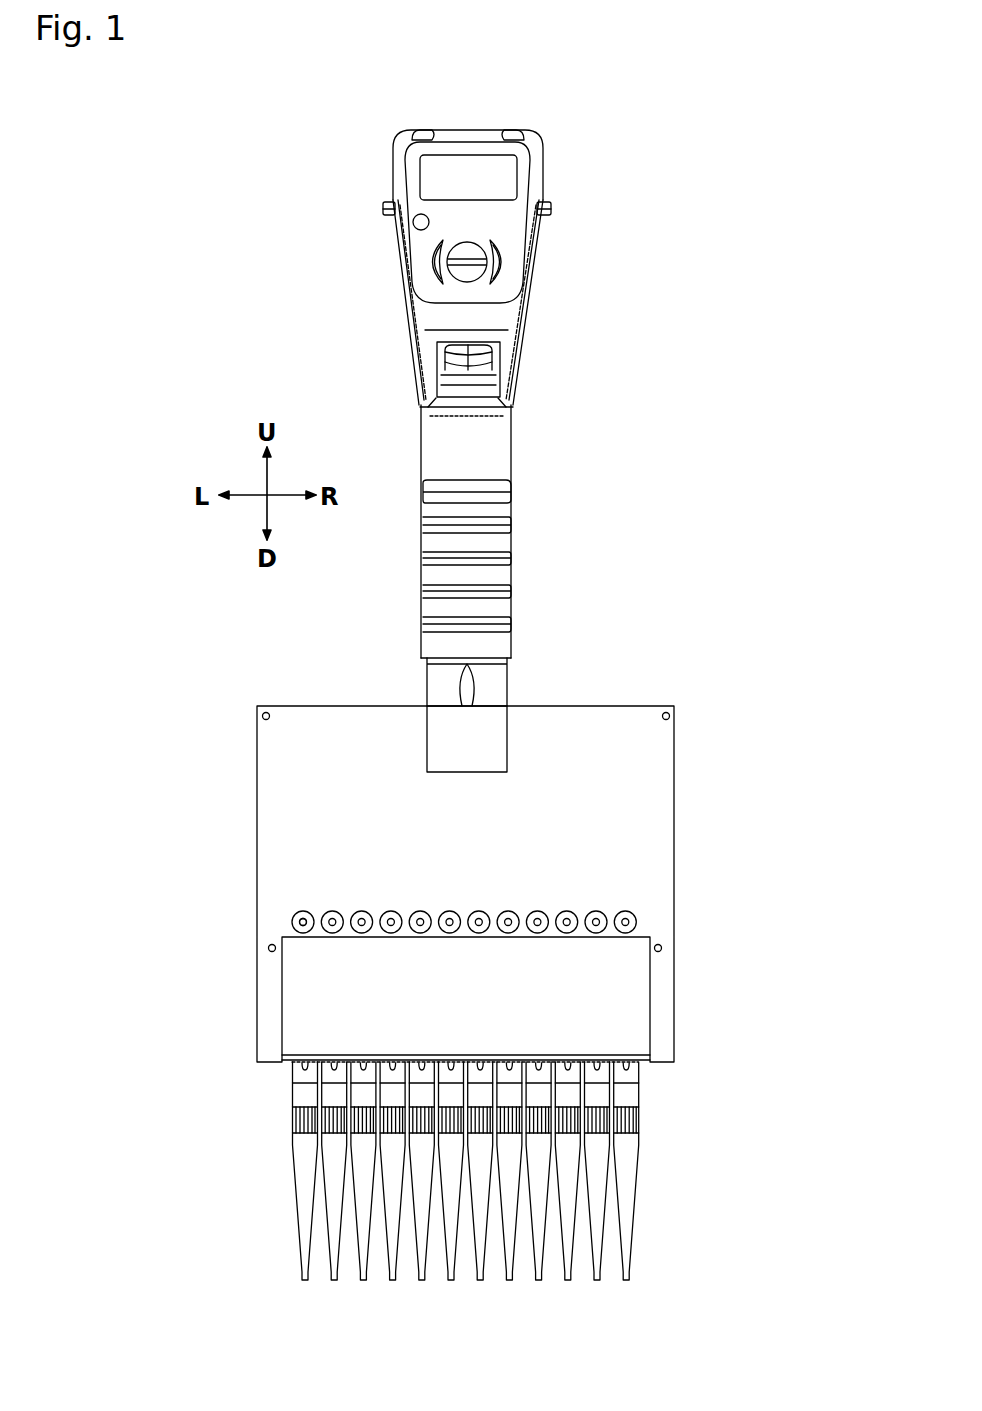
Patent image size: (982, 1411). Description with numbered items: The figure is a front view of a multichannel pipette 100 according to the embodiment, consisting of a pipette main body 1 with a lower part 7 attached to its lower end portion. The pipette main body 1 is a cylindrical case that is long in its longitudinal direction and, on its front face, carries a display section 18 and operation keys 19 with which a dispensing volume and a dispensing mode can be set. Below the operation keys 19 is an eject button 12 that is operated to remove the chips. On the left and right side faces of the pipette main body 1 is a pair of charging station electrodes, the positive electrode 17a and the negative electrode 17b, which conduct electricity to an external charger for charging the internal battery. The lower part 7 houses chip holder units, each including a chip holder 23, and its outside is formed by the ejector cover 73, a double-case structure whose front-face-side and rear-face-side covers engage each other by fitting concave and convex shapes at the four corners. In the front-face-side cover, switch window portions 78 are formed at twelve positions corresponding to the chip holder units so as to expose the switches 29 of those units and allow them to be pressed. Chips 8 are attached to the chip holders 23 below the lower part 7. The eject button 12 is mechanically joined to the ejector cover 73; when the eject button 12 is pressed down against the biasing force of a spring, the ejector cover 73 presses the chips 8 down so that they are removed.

The multichannel pipette 100 is at (583, 134).
The pipette main body 1 is at (585, 438).
The display section 18 is at (501, 172).
The charging station electrode (+) 17a is at (552, 212).
The charging station electrode (−) 17b is at (383, 211).
The operation keys 19 is at (505, 258).
The eject button 12 is at (473, 348).
The lower part 7 is at (708, 718).
The ejector cover 73 is at (650, 846).
The switch window portions 78 is at (306, 912).
The switches 29 is at (305, 926).
The chip holder 23 is at (632, 1077).
The chips 8 is at (634, 1158).